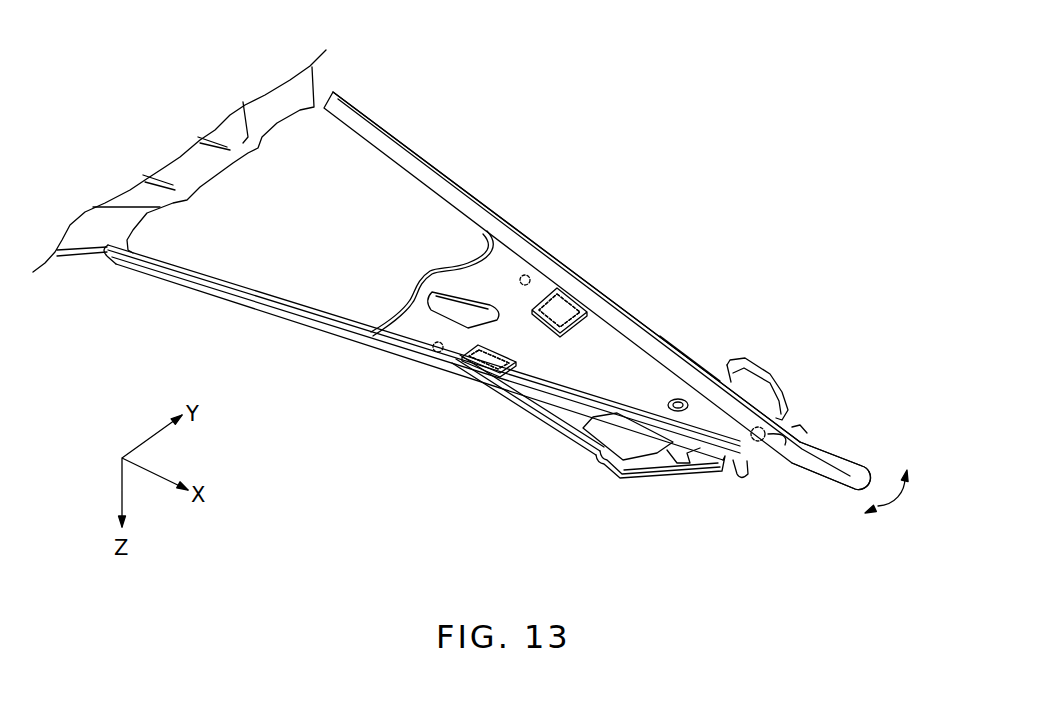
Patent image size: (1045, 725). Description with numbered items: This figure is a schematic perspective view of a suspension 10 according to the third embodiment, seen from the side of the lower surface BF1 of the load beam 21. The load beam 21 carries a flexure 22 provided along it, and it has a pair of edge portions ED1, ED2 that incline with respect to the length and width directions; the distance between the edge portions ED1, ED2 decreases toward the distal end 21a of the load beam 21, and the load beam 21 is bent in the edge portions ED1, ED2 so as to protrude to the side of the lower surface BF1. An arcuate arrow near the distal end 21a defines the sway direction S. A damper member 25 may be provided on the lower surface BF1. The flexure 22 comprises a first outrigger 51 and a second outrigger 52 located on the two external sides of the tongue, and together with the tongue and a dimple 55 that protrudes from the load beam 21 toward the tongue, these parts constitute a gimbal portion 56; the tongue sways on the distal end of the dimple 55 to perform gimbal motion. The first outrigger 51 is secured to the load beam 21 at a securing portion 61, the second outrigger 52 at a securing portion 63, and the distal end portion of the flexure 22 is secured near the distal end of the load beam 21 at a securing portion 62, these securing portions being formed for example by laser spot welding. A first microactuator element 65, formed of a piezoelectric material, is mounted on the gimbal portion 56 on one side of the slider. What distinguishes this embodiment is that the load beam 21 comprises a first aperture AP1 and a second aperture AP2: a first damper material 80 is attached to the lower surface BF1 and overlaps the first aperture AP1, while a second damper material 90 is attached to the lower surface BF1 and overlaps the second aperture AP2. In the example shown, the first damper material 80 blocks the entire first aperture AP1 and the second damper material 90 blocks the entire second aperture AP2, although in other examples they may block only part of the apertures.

The suspension 10 is at (596, 102).
The load beam 21 is at (597, 285).
The distal end 21a is at (870, 447).
The flexure 22 is at (686, 326).
The damper member 25 is at (378, 201).
The first outrigger 51 is at (600, 460).
The second outrigger 52 is at (679, 399).
The dimple 55 is at (733, 356).
The gimbal portion 56 is at (582, 480).
The securing portion 61 is at (430, 348).
The securing portion 62 is at (761, 428).
The securing portion 63 is at (528, 274).
The first microactuator element 65 is at (645, 452).
The first damper material 80 is at (450, 363).
The second damper material 90 is at (566, 298).
The first aperture AP1 is at (507, 352).
The second aperture AP2 is at (606, 298).
The lower surface BF1 is at (560, 457).
The edge portion ED1 is at (303, 333).
The edge portion ED2 is at (380, 120).
The sway direction S is at (878, 505).